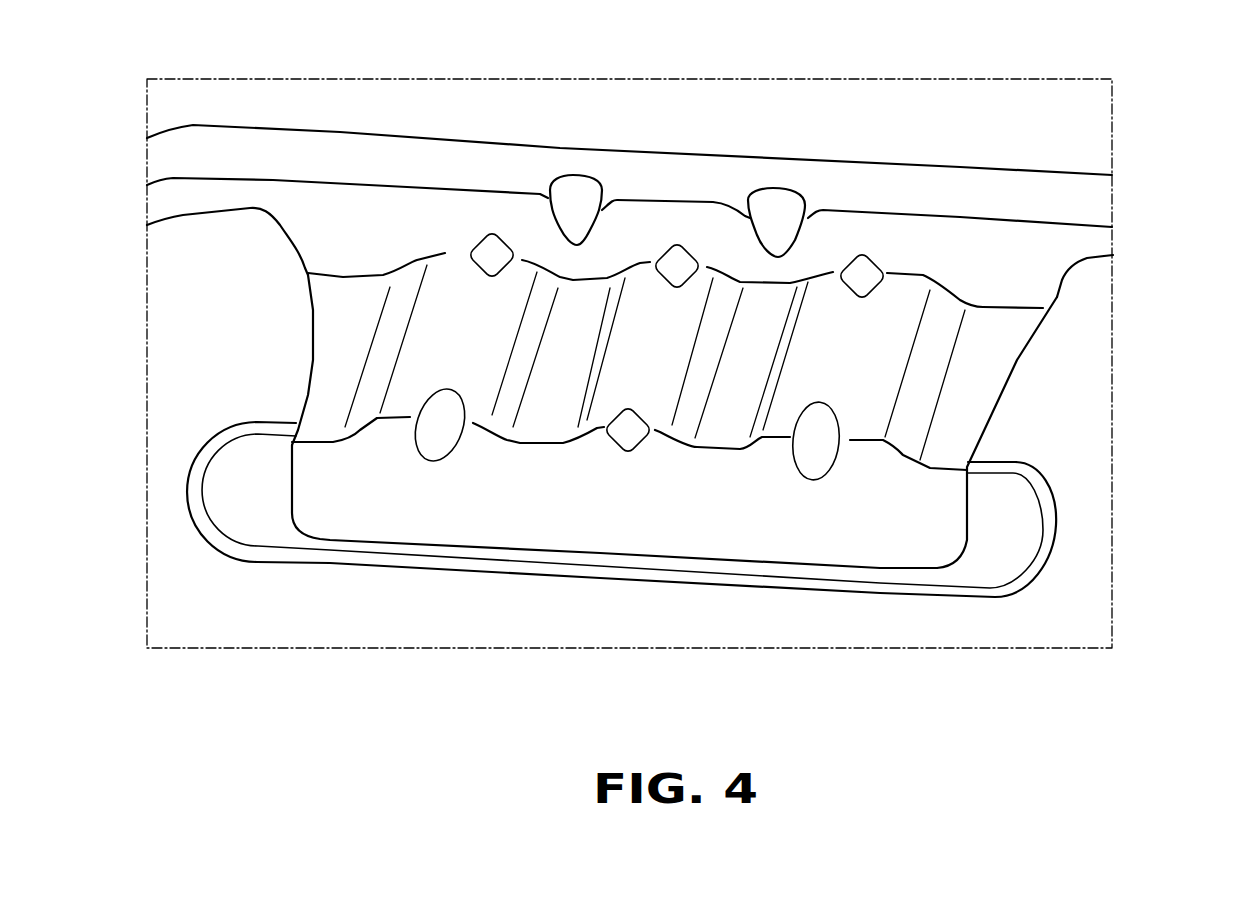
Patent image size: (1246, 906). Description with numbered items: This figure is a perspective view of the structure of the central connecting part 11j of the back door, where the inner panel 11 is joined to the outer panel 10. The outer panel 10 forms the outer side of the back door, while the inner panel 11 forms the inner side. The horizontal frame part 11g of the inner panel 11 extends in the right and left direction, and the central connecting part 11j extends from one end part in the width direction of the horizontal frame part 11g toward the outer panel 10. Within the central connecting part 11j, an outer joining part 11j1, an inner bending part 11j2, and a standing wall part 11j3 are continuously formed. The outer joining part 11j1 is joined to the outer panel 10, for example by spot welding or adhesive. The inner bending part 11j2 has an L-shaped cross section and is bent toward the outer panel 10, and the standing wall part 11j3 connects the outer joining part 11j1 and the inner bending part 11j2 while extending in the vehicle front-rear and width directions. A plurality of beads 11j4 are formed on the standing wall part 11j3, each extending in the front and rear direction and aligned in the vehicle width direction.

The outer panel 10 is at (1005, 530).
The inner panel 11 is at (1010, 130).
The horizontal frame part 11g is at (922, 108).
The central connecting part 11j is at (755, 536).
The outer joining part 11j1 is at (461, 510).
The inner bending part 11j2 is at (1012, 286).
The standing wall part 11j3 is at (992, 382).
The beads 11j4 is at (942, 414).